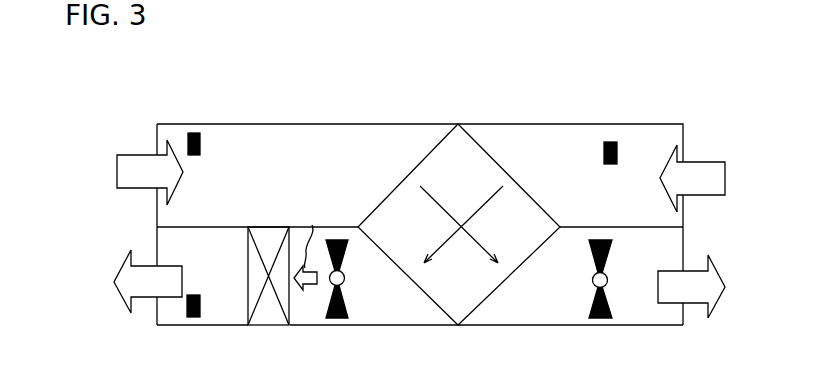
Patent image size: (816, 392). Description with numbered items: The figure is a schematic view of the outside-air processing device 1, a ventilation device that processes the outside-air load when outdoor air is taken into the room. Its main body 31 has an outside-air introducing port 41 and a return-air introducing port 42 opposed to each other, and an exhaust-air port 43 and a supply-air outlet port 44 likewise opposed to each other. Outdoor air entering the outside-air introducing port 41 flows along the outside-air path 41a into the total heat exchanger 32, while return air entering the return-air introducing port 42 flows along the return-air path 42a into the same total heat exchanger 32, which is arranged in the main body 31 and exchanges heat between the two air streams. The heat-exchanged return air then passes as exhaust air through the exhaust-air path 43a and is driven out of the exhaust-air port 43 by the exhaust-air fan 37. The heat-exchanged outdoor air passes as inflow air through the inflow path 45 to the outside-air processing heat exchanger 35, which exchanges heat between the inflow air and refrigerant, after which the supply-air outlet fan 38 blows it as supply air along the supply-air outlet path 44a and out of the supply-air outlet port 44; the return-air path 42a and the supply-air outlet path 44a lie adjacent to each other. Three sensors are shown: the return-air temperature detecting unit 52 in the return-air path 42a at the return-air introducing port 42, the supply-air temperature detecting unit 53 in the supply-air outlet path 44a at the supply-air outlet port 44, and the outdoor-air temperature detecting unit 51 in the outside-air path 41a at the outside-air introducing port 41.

The outside-air processing device 1 is at (672, 96).
The main body 31 is at (622, 125).
The total heat exchanger 32 is at (485, 305).
The outside-air processing heat exchanger 35 is at (279, 320).
The exhaust-air fan 37 is at (607, 318).
The supply-air outlet fan 38 is at (338, 318).
The outside-air introducing port 41 is at (685, 206).
The outside-air path 41a is at (537, 133).
The return-air introducing port 42 is at (152, 205).
The return-air path 42a is at (402, 133).
The exhaust-air port 43 is at (685, 325).
The exhaust-air path 43a is at (545, 326).
The supply-air outlet port 44 is at (152, 317).
The supply-air outlet path 44a is at (169, 318).
The inflow path 45 is at (401, 326).
The outdoor-air temperature detecting unit 51 is at (603, 152).
The return-air temperature detecting unit 52 is at (201, 145).
The supply-air temperature detecting unit 53 is at (200, 306).